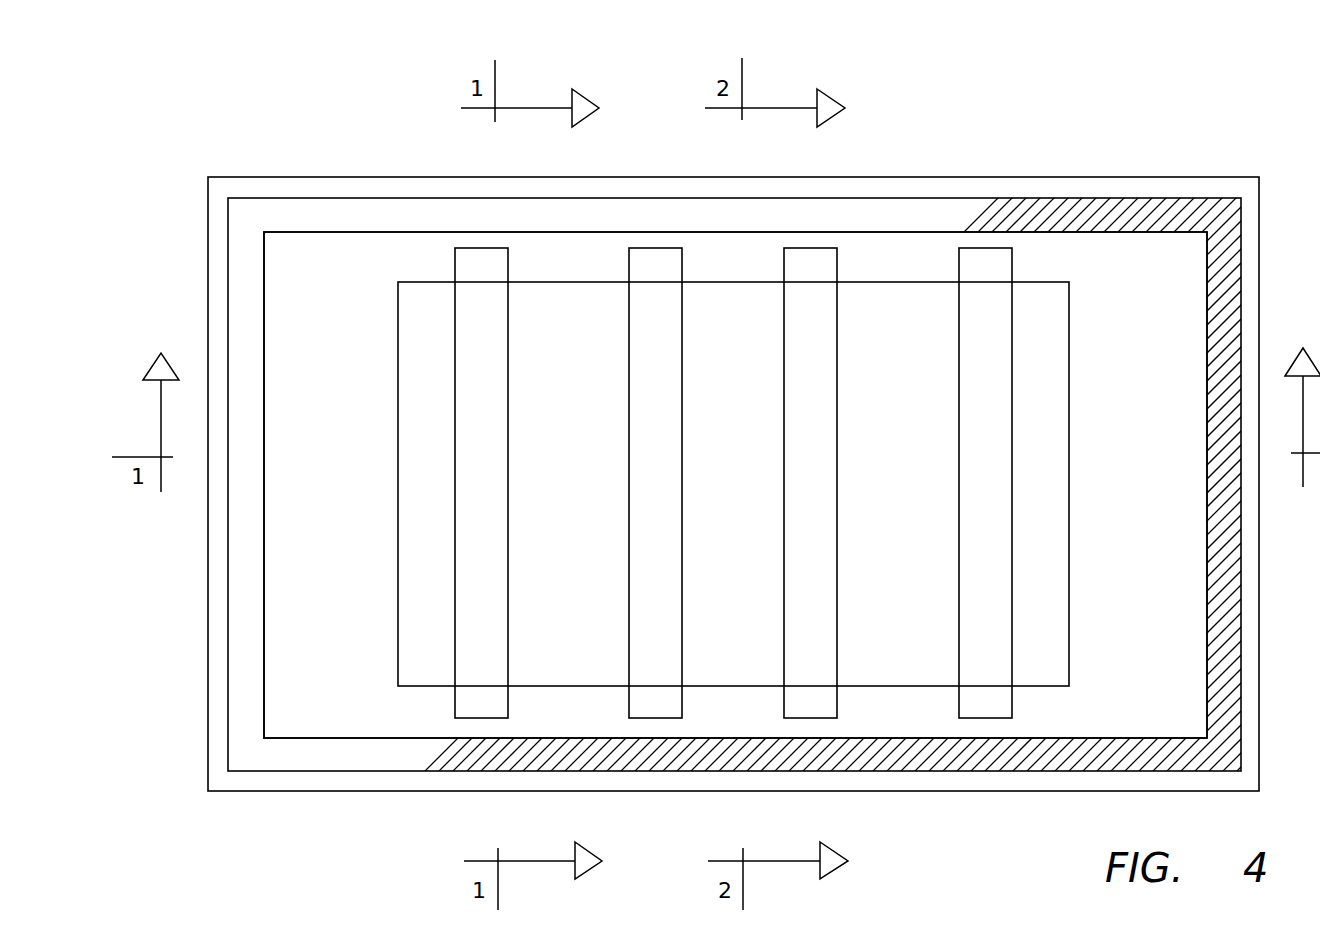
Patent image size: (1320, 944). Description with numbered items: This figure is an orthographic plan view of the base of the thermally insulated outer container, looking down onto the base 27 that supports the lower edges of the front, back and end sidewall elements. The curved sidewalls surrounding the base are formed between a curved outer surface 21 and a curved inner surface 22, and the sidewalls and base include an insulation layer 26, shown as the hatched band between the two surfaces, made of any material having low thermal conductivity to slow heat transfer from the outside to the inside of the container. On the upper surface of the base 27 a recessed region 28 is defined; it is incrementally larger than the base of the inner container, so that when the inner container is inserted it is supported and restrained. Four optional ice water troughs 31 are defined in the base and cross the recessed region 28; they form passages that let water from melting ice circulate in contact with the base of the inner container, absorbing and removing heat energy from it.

The curved outer surface 21 is at (1076, 197).
The curved inner surface 22 is at (1073, 228).
The insulation layer 26 is at (377, 750).
The base 27 is at (313, 303).
The recessed region 28 is at (422, 505).
The ice water troughs 31 is at (663, 489).